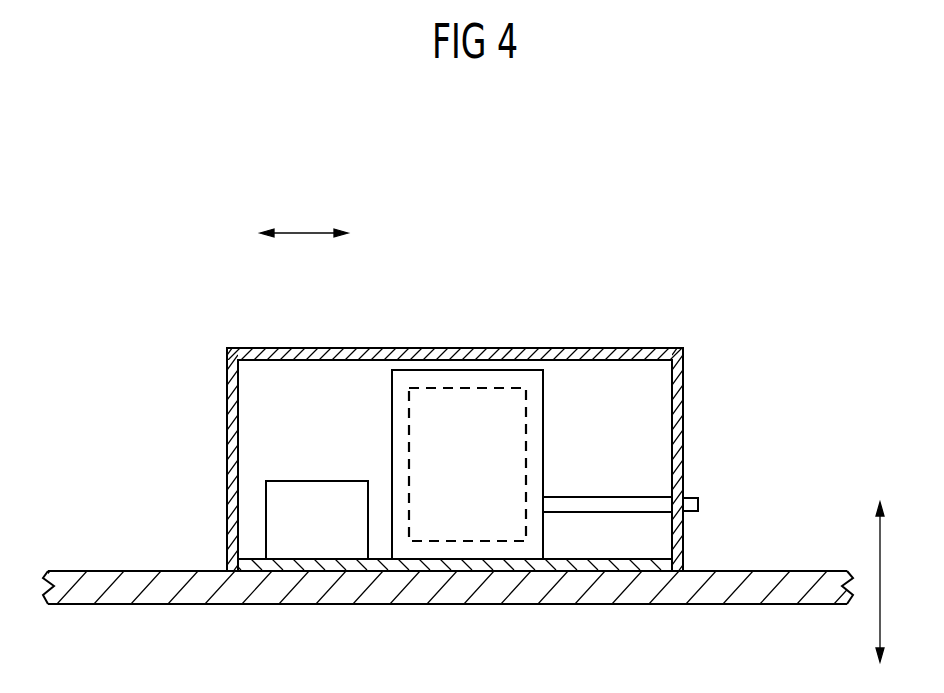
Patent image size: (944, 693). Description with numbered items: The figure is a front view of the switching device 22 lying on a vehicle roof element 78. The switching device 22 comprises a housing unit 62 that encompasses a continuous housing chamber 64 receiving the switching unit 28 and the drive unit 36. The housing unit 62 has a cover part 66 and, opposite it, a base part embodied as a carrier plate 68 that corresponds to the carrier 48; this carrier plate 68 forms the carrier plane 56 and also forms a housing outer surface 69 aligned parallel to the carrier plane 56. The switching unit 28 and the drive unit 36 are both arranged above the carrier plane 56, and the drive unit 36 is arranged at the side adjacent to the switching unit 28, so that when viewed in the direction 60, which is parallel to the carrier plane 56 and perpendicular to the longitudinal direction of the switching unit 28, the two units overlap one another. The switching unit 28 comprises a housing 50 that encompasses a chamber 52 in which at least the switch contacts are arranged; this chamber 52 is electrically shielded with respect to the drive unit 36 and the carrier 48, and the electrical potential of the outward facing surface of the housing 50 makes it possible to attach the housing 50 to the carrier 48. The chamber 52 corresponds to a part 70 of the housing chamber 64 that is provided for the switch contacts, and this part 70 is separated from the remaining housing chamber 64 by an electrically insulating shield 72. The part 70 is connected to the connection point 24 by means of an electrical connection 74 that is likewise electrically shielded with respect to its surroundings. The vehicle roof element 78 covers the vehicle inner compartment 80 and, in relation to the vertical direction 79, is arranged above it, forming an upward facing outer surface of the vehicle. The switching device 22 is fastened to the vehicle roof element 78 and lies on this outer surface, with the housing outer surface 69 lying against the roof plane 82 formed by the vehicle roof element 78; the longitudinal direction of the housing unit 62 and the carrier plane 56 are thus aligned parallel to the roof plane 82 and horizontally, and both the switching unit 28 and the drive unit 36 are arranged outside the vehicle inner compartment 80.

The switching device 22 is at (485, 430).
The connection point 24 is at (700, 502).
The switching unit 28 is at (487, 370).
The drive unit 36 is at (333, 481).
The carrier 48 is at (453, 567).
The housing 50 is at (437, 370).
The chamber 52 is at (506, 413).
The carrier plane 56 is at (388, 548).
The direction 60 is at (308, 232).
The housing unit 62 is at (684, 427).
The housing chamber 64 is at (588, 396).
The cover part 66 is at (268, 348).
The carrier plate 68 is at (603, 567).
The housing outer surface 69 is at (285, 583).
The part of the housing chamber 70 is at (492, 510).
The electrically insulating shield 72 is at (412, 548).
The electrical connection 74 is at (648, 513).
The vehicle roof element 78 is at (761, 587).
The vertical direction 79 is at (880, 545).
The vehicle inner compartment 80 is at (135, 643).
The roof plane 82 is at (193, 560).